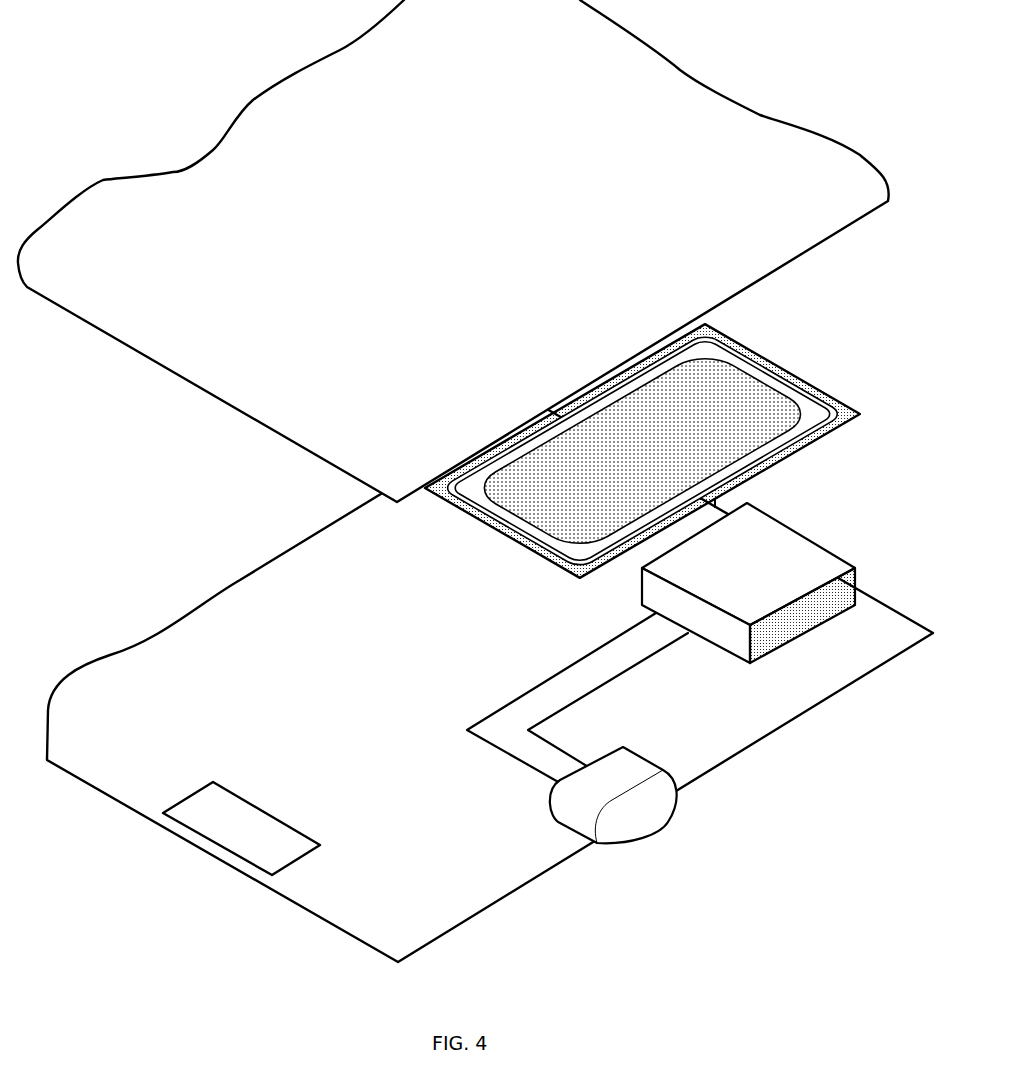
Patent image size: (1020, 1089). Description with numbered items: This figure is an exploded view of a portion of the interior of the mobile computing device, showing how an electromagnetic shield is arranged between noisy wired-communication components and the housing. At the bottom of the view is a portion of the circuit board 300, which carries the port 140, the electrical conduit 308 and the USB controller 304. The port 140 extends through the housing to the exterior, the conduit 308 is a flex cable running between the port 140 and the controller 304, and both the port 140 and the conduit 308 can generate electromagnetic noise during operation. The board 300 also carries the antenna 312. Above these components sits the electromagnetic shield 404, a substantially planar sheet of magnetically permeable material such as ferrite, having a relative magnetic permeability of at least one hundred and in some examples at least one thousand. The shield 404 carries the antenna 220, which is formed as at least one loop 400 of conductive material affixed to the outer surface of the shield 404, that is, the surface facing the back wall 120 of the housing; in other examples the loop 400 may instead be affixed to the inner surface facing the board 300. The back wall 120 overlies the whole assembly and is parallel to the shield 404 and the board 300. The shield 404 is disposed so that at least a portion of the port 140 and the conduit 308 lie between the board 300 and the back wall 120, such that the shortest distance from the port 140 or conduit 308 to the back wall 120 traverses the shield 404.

The rear wall 120 is at (360, 97).
The antenna 220 is at (663, 437).
The electromagnetic shield 404 is at (718, 390).
The loop 400 is at (528, 522).
The circuit board 300 is at (275, 573).
The USB controller 304 is at (785, 545).
The electrical conduit 308 is at (620, 660).
The port 140 is at (608, 813).
The antenna 312 is at (213, 845).